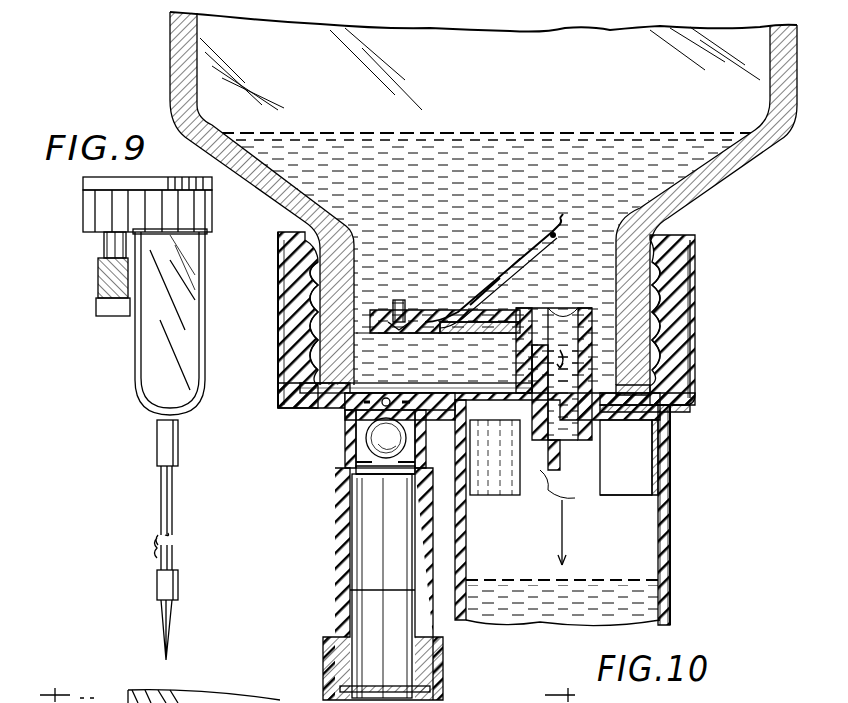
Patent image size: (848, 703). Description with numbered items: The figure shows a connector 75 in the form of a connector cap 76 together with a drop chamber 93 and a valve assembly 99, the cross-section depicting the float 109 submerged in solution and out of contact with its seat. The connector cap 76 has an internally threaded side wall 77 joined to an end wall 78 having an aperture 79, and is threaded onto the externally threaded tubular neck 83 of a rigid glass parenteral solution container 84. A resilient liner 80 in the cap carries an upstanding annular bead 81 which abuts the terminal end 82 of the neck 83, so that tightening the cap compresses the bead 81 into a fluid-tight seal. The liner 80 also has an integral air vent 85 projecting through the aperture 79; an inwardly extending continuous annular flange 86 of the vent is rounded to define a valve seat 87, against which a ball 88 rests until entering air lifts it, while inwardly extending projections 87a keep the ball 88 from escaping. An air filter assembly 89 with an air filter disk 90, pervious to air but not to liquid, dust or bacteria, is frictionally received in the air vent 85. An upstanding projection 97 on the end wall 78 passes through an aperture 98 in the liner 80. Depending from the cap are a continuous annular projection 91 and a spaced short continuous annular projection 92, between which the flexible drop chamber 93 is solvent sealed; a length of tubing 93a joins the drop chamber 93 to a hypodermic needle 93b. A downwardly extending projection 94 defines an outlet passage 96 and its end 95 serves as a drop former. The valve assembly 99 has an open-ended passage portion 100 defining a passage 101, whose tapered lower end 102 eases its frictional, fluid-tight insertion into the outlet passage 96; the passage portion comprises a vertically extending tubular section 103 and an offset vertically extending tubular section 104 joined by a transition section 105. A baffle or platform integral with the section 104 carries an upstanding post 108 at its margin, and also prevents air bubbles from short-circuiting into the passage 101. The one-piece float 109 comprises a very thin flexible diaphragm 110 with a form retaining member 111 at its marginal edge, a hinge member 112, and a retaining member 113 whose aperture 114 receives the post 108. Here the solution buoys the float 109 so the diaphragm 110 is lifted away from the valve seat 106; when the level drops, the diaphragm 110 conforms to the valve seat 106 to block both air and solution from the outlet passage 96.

In FIG. 9, the connector 75 is at (82, 210).
In FIG. 10, the connector 75 is at (697, 300).
In FIG. 10, the connector cap 76 is at (693, 352).
In FIG. 10, the internally threaded side wall 77 is at (664, 348).
In FIG. 10, the end wall 78 is at (340, 412).
In FIG. 10, the aperture 79 is at (345, 434).
In FIG. 10, the liner 80 is at (680, 412).
In FIG. 10, the upstanding annular bead 81 is at (652, 389).
In FIG. 10, the terminal end 82 is at (280, 396).
In FIG. 10, the externally threaded tubular neck 83 is at (290, 302).
In FIG. 10, the parenteral solution container 84 is at (736, 166).
In FIG. 10, the air vent 85 is at (356, 462).
In FIG. 10, the continuous annular flange 86 is at (406, 478).
In FIG. 10, the valve seat 87 is at (380, 478).
In FIG. 10, the inwardly extending projections 87a is at (406, 400).
In FIG. 10, the ball 88 is at (406, 440).
In FIG. 9, the air filter assembly 89 is at (96, 284).
In FIG. 10, the air filter assembly 89 is at (332, 620).
In FIG. 10, the air filter disk 90 is at (408, 688).
In FIG. 10, the continuous annular projection 91 is at (672, 464).
In FIG. 10, the short continuous annular projection 92 is at (676, 412).
In FIG. 9, the drop chamber 93 is at (136, 358).
In FIG. 10, the drop chamber 93 is at (672, 520).
In FIG. 9, the tubing 93a is at (172, 507).
In FIG. 9, the hypodermic needle 93b is at (157, 585).
In FIG. 10, the downwardly extending projection 94 is at (596, 465).
In FIG. 10, the end 95 is at (575, 500).
In FIG. 10, the outlet passage 96 is at (556, 470).
In FIG. 10, the upstanding projection 97 is at (590, 367).
In FIG. 10, the aperture 98 is at (510, 388).
In FIG. 10, the valve assembly 99 is at (503, 351).
In FIG. 10, the passage portion 100 is at (552, 308).
In FIG. 10, the passage 101 is at (532, 322).
In FIG. 10, the tapered lower end 102 is at (596, 441).
In FIG. 10, the vertically extending tubular section 103 is at (540, 430).
In FIG. 10, the vertically extending tubular section 104 is at (548, 330).
In FIG. 10, the transition section 105 is at (592, 367).
In FIG. 10, the valve seat 106 is at (522, 292).
In FIG. 10, the upstanding post 108 is at (392, 315).
In FIG. 10, the float 109 is at (456, 290).
In FIG. 10, the flexible diaphragm 110 is at (528, 228).
In FIG. 10, the form retaining member 111 is at (560, 214).
In FIG. 10, the hinge member 112 is at (470, 303).
In FIG. 10, the retaining member 113 is at (380, 322).
In FIG. 10, the aperture 114 is at (383, 367).